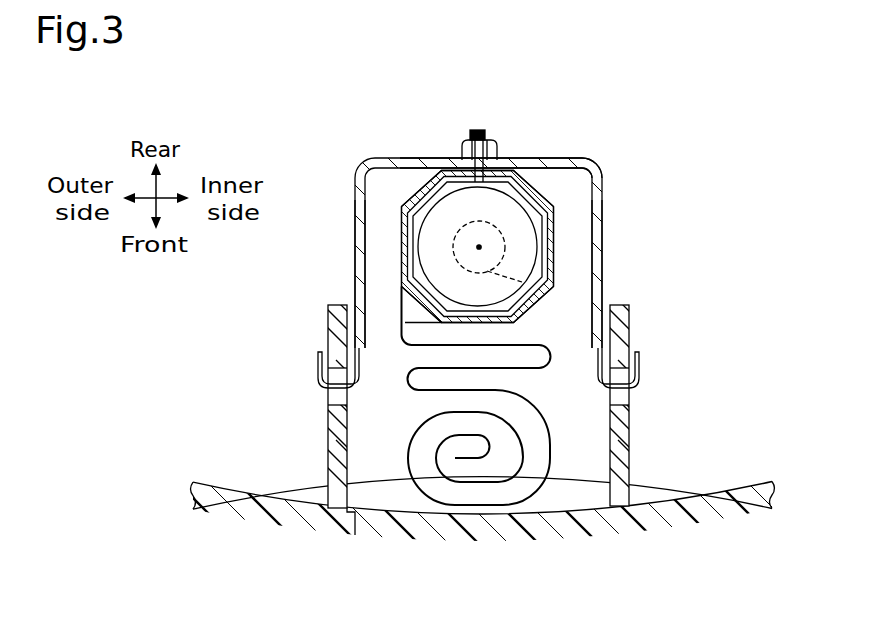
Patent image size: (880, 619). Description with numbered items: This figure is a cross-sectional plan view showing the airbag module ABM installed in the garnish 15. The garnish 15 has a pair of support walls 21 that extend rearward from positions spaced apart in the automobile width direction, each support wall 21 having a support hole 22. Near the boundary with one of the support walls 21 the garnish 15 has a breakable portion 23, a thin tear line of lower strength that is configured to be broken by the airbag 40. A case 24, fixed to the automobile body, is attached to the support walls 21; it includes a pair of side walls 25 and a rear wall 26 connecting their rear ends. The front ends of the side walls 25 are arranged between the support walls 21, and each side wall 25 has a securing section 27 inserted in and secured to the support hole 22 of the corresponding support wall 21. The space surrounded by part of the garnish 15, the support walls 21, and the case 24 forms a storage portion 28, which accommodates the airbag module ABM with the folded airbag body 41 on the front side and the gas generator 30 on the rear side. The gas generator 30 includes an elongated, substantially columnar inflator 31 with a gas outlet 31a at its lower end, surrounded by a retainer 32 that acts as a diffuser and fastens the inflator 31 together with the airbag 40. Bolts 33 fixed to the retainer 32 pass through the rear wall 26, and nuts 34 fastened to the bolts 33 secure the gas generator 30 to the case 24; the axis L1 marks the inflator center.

The garnish 15 is at (223, 514).
The support walls 21 is at (334, 458).
The support hole 22 is at (328, 401).
The breakable portion 23 is at (354, 541).
The case 24 is at (480, 250).
The side walls 25 is at (356, 197).
The rear wall 26 is at (568, 159).
The securing section 27 is at (318, 357).
The storage portion 28 is at (393, 474).
The gas generator 30 is at (650, 240).
The inflator 31 is at (540, 240).
The gas outlet 31a is at (548, 299).
The retainer 32 is at (552, 268).
The bolts 33 is at (484, 132).
The nuts 34 is at (462, 153).
The airbag 40 is at (504, 396).
The airbag body 41 is at (546, 419).
The axis line L1 is at (480, 247).
The airbag module ABM is at (388, 226).